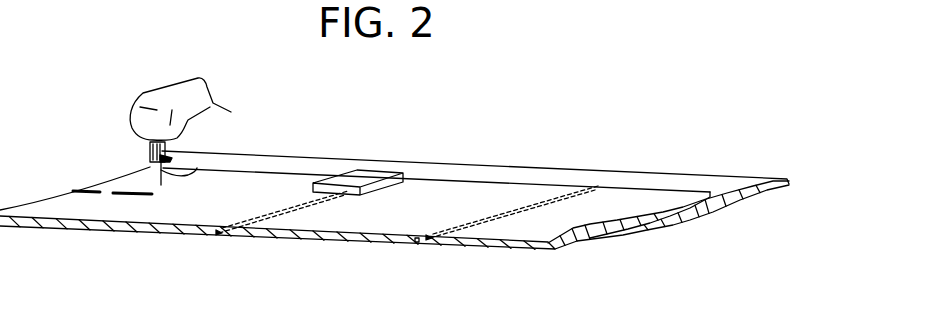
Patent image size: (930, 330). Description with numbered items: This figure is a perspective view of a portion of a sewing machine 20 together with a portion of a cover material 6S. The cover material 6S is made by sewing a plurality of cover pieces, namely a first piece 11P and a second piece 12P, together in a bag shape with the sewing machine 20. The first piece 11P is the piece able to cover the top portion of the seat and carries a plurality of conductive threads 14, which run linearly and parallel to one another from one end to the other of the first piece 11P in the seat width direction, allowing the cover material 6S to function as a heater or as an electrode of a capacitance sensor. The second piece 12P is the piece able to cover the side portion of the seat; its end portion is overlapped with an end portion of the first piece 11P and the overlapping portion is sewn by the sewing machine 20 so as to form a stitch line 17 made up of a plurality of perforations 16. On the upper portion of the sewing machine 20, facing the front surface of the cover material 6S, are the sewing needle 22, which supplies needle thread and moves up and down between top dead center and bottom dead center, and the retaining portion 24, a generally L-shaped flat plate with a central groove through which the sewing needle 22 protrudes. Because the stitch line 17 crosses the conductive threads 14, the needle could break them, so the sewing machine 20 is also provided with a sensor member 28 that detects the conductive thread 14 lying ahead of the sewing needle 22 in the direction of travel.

The sewing machine 20 is at (149, 107).
The retaining portion 24 is at (148, 152).
The sewing needle 22 is at (197, 168).
The sensor member 28 is at (367, 173).
The cover material 6S is at (394, 179).
The first piece 11P is at (487, 182).
The second piece 12P is at (692, 180).
The conductive threads 14 is at (280, 222).
The stitch lines 17 is at (130, 194).
The perforations 16 is at (105, 234).